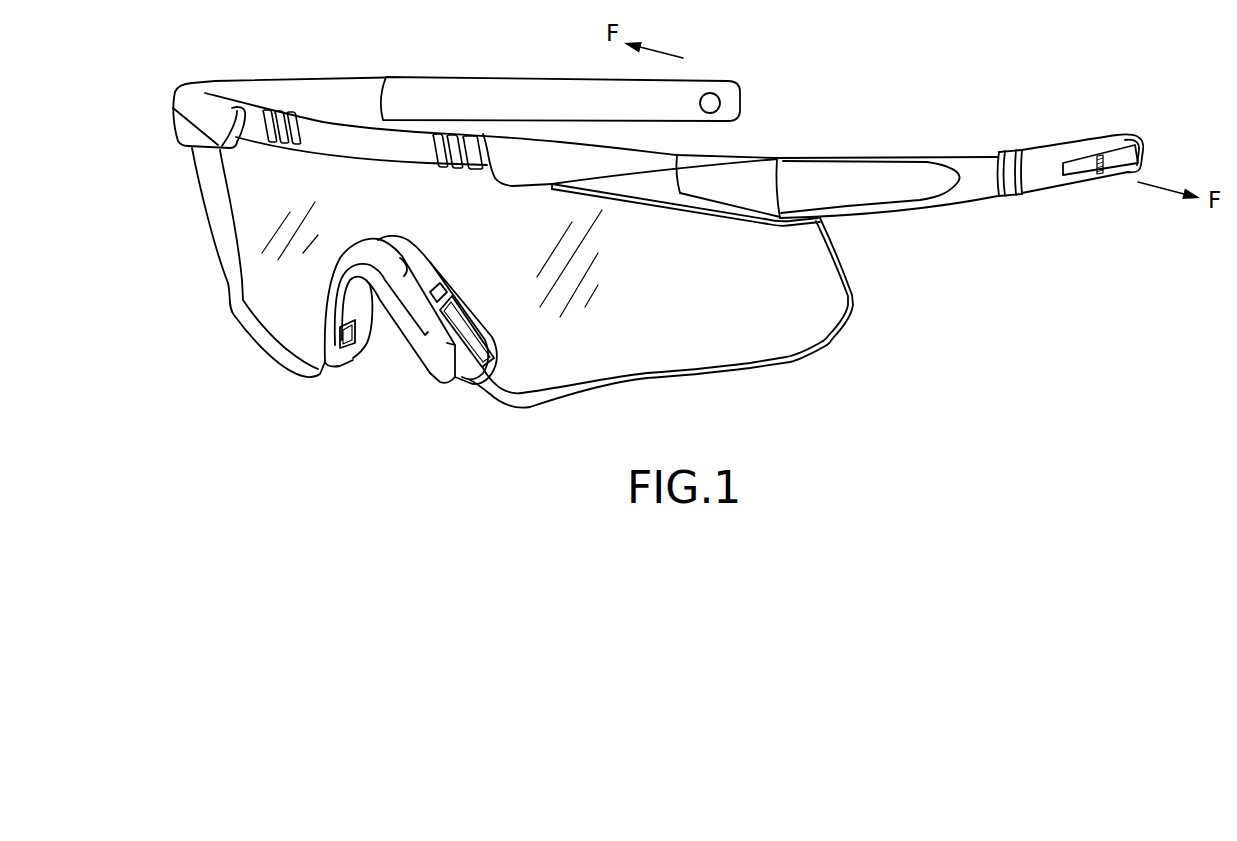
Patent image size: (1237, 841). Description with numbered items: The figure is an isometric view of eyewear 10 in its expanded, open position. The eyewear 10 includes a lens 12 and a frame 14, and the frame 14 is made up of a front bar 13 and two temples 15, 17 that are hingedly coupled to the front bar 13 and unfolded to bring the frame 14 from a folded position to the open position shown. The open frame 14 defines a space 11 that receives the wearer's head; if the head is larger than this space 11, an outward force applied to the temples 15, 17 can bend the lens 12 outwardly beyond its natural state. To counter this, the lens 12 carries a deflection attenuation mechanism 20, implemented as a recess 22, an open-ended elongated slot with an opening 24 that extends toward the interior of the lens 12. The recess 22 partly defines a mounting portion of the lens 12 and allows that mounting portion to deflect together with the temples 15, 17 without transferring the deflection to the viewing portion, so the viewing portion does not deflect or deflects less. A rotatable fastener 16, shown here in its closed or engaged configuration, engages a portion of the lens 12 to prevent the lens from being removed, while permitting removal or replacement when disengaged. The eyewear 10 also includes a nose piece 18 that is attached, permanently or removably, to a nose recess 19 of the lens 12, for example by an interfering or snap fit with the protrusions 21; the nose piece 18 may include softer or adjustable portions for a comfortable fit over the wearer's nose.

The eyewear 10 is at (256, 484).
The space 11 is at (884, 115).
The lens 12 is at (643, 365).
The front bar 13 is at (443, 131).
The frame 14 is at (775, 158).
The temple 15 is at (1063, 185).
The rotatable fastener 16 is at (172, 108).
The temple 17 is at (421, 76).
The nose piece 18 is at (428, 383).
The nose recess 19 is at (378, 390).
The deflection attenuation mechanism 20 is at (713, 237).
The protrusions 21 is at (345, 367).
The recess 22 is at (652, 219).
The opening 24 is at (855, 240).